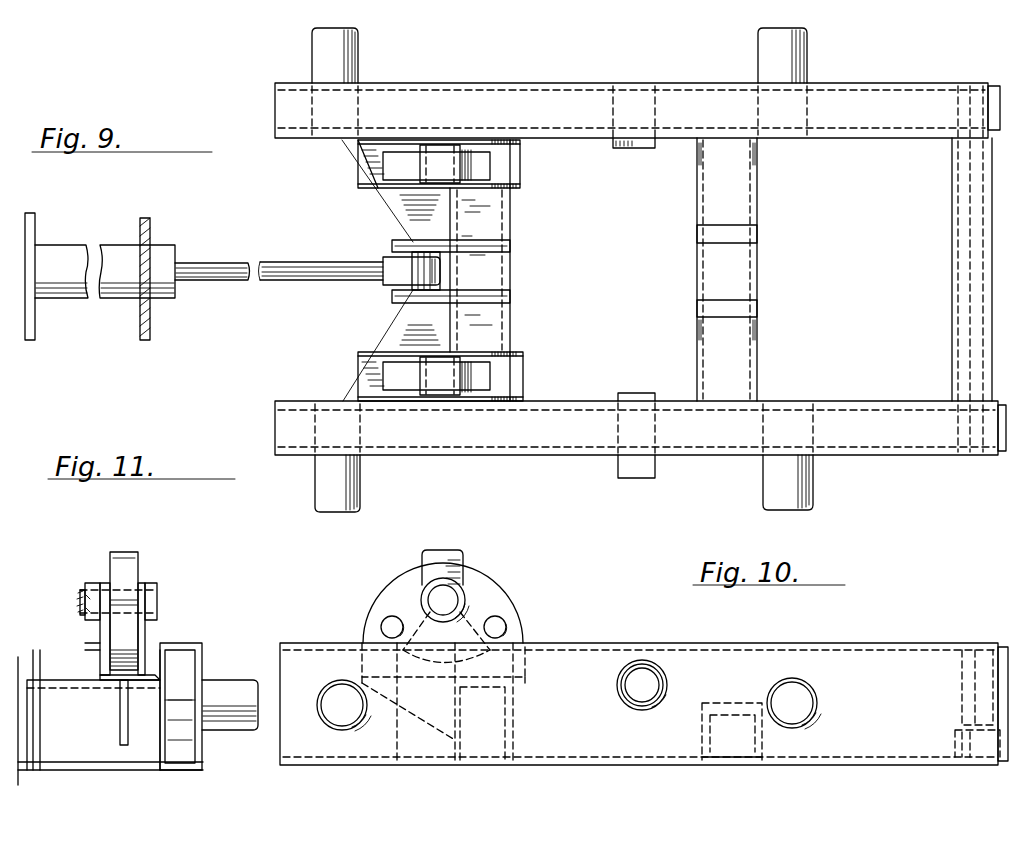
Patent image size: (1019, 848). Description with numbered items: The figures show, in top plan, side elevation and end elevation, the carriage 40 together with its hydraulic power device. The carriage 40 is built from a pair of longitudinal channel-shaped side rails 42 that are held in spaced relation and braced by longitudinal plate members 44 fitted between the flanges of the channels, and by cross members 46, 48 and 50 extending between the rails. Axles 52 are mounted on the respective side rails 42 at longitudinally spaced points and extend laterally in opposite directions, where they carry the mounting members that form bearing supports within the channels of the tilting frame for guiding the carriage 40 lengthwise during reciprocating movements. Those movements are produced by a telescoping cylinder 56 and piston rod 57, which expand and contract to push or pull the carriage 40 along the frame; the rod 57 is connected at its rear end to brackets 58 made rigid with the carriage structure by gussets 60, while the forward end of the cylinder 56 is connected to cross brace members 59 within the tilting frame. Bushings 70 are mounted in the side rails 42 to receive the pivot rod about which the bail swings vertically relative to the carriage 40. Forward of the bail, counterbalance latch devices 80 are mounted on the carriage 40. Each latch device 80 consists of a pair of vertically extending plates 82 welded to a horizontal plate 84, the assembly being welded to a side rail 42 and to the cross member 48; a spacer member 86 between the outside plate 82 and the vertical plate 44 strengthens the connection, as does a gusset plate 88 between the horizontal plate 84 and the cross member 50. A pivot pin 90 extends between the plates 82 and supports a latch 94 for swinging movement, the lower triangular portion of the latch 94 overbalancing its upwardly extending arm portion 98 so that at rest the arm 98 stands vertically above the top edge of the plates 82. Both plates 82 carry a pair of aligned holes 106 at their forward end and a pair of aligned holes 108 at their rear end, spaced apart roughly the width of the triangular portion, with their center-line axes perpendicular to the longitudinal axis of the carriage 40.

In FIG. 9, the carriage 40 is at (640, 270).
In FIG. 10, the carriage 40 is at (645, 682).
In FIG. 9, the side rails 42 is at (884, 98).
In FIG. 11, the side rails 42 is at (206, 655).
In FIG. 10, the side rails 42 is at (868, 650).
In FIG. 9, the longitudinal plate members 44 is at (907, 131).
In FIG. 11, the longitudinal plate members 44 is at (168, 745).
In FIG. 10, the longitudinal plate members 44 is at (639, 703).
In FIG. 9, the cross member 46 is at (995, 236).
In FIG. 10, the cross member 46 is at (1010, 695).
In FIG. 9, the cross member 48 is at (758, 223).
In FIG. 10, the cross member 48 is at (700, 731).
In FIG. 9, the cross member 50 is at (450, 222).
In FIG. 10, the cross member 50 is at (455, 709).
In FIG. 9, the axles 52 is at (360, 47).
In FIG. 11, the axles 52 is at (233, 688).
In FIG. 10, the axles 52 is at (342, 718).
In FIG. 9, the telescoping cylinder 56 is at (58, 250).
In FIG. 9, the piston rod 57 is at (208, 265).
In FIG. 9, the brackets 58 is at (392, 245).
In FIG. 11, the brackets 58 is at (46, 718).
In FIG. 9, the cross brace members 59 is at (36, 327).
In FIG. 9, the gussets 60 is at (378, 206).
In FIG. 9, the bushings 70 is at (614, 141).
In FIG. 10, the bushings 70 is at (635, 693).
In FIG. 9, the counterbalance latch devices 80 is at (542, 192).
In FIG. 11, the counterbalance latch devices 80 is at (111, 592).
In FIG. 10, the counterbalance latch devices 80 is at (443, 589).
In FIG. 9, the vertically extending plates 82 is at (515, 147).
In FIG. 11, the vertically extending plates 82 is at (150, 581).
In FIG. 10, the vertically extending plates 82 is at (487, 590).
In FIG. 9, the horizontal plate 84 is at (358, 171).
In FIG. 11, the horizontal plate 84 is at (118, 681).
In FIG. 10, the horizontal plate 84 is at (527, 677).
In FIG. 11, the spacer member 86 is at (152, 658).
In FIG. 11, the gusset plate 88 is at (98, 585).
In FIG. 11, the pivot pin 90 is at (80, 601).
In FIG. 10, the pivot pin 90 is at (440, 600).
In FIG. 9, the latch 94 is at (472, 148).
In FIG. 11, the latch 94 is at (128, 542).
In FIG. 10, the latch 94 is at (474, 571).
In FIG. 10, the arm portion 98 is at (441, 550).
In FIG. 10, the holes 106 is at (382, 626).
In FIG. 10, the holes 108 is at (505, 626).